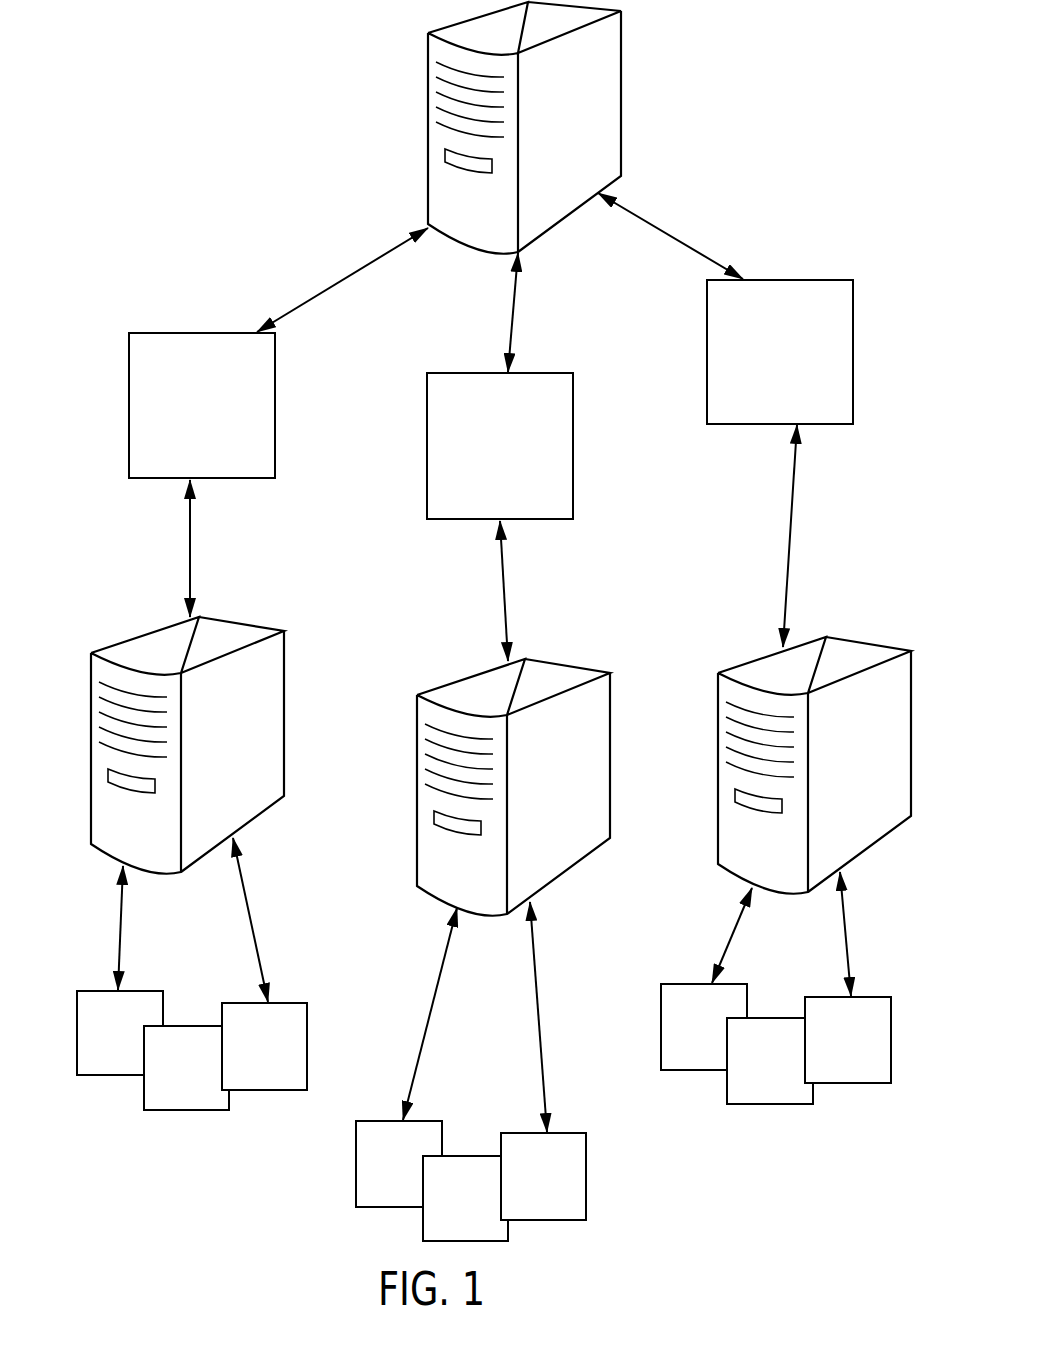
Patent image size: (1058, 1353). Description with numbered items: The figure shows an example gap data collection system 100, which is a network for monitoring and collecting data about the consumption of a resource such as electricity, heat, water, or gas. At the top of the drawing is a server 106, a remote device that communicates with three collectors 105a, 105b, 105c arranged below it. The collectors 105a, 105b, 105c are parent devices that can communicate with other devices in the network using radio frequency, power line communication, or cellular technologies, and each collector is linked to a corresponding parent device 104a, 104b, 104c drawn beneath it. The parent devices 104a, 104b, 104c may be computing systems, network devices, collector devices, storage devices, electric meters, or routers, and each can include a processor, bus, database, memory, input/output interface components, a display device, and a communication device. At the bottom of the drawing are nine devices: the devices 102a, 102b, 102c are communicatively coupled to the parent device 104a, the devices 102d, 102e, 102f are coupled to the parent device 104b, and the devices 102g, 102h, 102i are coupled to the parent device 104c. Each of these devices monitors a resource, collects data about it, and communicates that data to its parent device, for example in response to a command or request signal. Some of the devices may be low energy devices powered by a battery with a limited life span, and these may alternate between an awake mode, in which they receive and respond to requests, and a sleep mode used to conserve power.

The gap data collection system 100 is at (158, 212).
The server 106 is at (427, 129).
The collector 105a is at (203, 333).
The collector 105b is at (535, 373).
The collector 105c is at (827, 280).
The parent device 104a is at (242, 620).
The parent device 104b is at (567, 662).
The parent device 104c is at (880, 642).
The device 102a is at (105, 991).
The device 102b is at (198, 1026).
The device 102c is at (293, 1003).
The device 102d is at (380, 1121).
The device 102e is at (473, 1156).
The device 102f is at (570, 1133).
The device 102g is at (687, 984).
The device 102h is at (780, 1018).
The device 102i is at (877, 997).